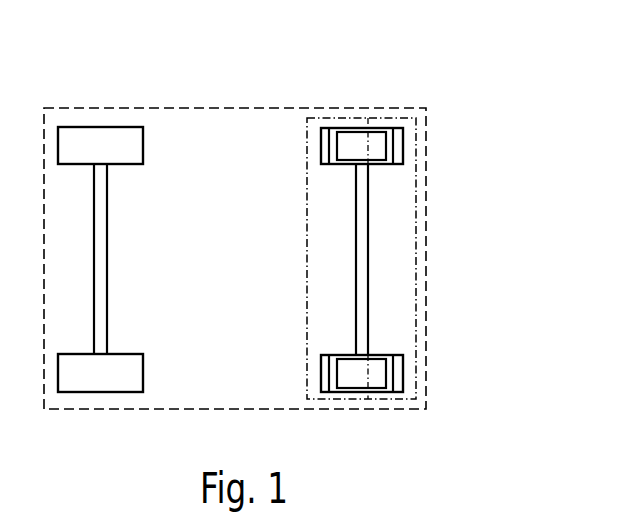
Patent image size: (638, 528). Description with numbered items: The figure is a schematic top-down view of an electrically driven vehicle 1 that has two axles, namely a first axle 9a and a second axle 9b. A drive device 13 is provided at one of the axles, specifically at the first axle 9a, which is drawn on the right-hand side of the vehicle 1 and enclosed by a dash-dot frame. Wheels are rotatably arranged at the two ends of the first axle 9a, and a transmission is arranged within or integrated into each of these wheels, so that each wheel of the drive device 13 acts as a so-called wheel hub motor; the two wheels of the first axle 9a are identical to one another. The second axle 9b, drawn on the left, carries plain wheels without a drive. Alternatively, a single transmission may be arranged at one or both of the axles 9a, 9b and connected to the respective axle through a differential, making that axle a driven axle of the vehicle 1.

The vehicle 1 is at (465, 76).
The first axle 9a is at (370, 237).
The second axle 9b is at (102, 96).
The drive device 13 is at (418, 183).